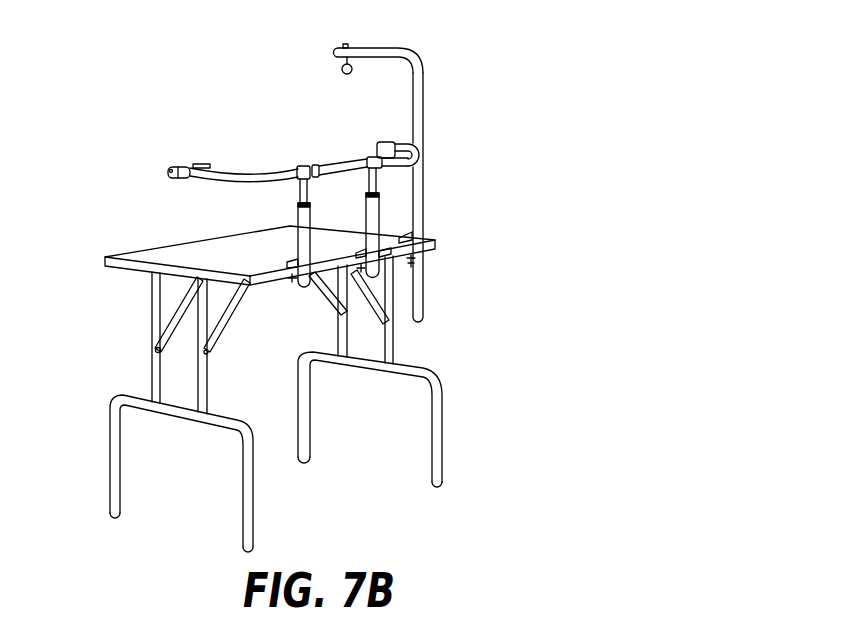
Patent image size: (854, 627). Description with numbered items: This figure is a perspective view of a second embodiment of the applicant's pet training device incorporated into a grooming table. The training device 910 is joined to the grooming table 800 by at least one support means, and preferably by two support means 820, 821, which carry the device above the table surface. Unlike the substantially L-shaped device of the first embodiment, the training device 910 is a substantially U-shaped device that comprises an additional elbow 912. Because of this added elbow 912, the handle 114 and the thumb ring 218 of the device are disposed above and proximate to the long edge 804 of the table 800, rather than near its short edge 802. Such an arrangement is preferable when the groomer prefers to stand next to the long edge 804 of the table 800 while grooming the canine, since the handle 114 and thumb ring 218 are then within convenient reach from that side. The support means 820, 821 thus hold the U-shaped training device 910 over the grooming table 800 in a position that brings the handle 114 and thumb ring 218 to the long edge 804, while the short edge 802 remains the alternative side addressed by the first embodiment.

The grooming table 800 is at (118, 252).
The long edge 804 is at (155, 245).
The short edge 802 is at (125, 265).
The support means 820 is at (387, 216).
The support means 821 is at (291, 243).
The elbow 912 is at (252, 175).
The handle 114 is at (178, 176).
The thumb ring 218 is at (168, 166).
The training device 910 is at (418, 158).